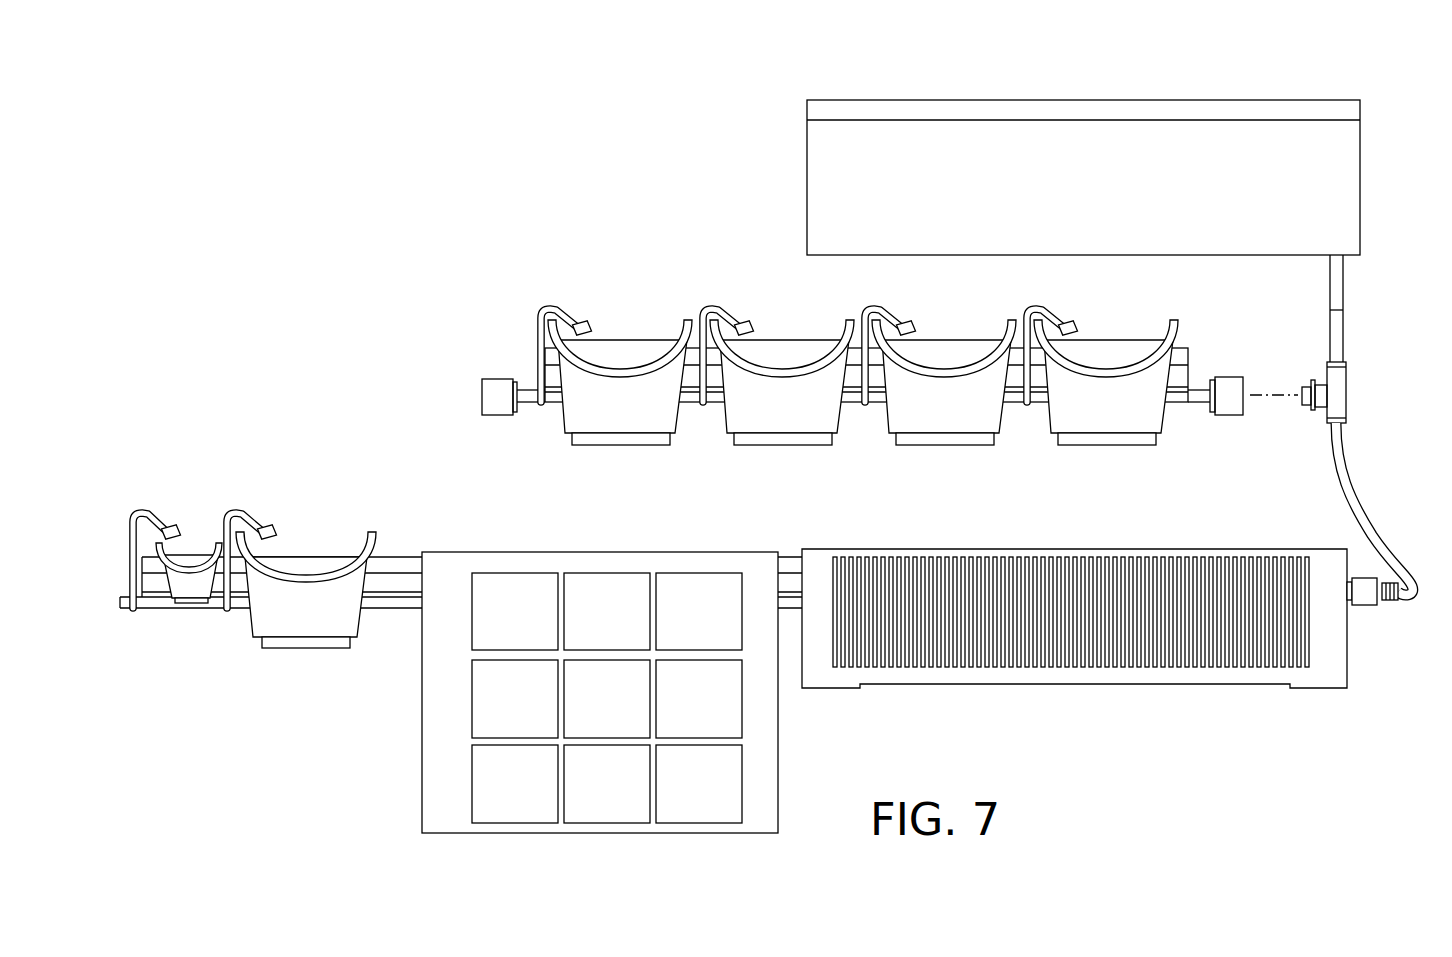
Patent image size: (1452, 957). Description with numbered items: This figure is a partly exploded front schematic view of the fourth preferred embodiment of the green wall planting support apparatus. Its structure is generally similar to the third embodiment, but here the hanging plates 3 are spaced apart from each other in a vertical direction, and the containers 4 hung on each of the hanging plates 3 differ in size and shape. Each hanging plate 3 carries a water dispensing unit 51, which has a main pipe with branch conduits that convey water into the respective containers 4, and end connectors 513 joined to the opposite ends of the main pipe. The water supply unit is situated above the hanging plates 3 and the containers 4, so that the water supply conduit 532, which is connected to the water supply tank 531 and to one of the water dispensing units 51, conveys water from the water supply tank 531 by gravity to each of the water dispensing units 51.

The water supply tank 531 is at (1160, 157).
The water supply conduit 532 is at (1360, 515).
The end connector 513 is at (1365, 606).
The water dispensing unit 51 is at (1193, 404).
The hanging plate 3 is at (1185, 352).
The container 4 is at (945, 418).